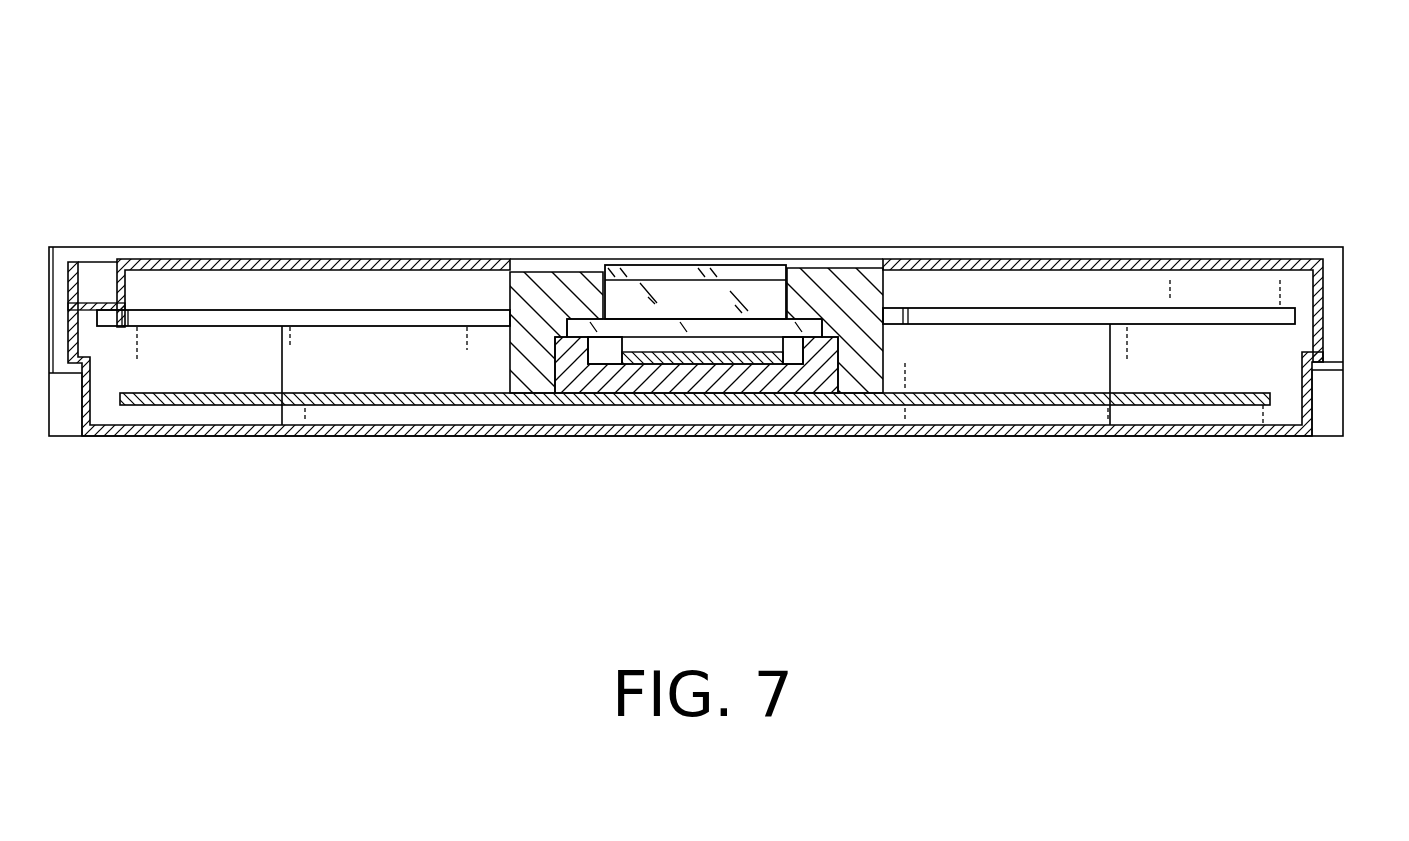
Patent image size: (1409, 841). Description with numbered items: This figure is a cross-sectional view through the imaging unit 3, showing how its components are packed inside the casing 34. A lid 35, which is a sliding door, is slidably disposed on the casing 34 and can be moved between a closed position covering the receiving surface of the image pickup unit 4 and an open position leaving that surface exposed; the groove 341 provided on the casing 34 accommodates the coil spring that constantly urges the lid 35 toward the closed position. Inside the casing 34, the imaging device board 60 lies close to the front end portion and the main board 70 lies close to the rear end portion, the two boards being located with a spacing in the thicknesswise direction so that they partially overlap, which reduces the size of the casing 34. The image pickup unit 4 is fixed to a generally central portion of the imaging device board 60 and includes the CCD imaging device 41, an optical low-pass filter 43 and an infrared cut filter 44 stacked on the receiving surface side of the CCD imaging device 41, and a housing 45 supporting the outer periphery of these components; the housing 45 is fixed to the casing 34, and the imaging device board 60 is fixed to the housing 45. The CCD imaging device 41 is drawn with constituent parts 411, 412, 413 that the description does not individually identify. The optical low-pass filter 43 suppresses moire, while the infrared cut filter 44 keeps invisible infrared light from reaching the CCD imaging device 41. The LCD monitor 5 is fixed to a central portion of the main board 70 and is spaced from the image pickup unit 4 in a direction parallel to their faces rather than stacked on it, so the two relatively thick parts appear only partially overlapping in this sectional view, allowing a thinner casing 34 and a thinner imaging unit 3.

The imaging unit 3 is at (911, 90).
The image pickup unit 4 is at (703, 368).
The CCD imaging device 41 is at (696, 446).
The piezoelectric element 411 is at (715, 362).
The substrate 412 is at (655, 360).
The base 413 is at (782, 335).
The optical low-pass filter 43 is at (626, 305).
The infrared cut filter 44 is at (643, 270).
The housing 45 is at (863, 373).
The LCD monitor 5 is at (1035, 365).
The imaging device board 60 is at (968, 400).
The main board 70 is at (1200, 310).
The casing 34 is at (1308, 400).
The groove 341 is at (95, 280).
The lid 35 is at (1333, 328).